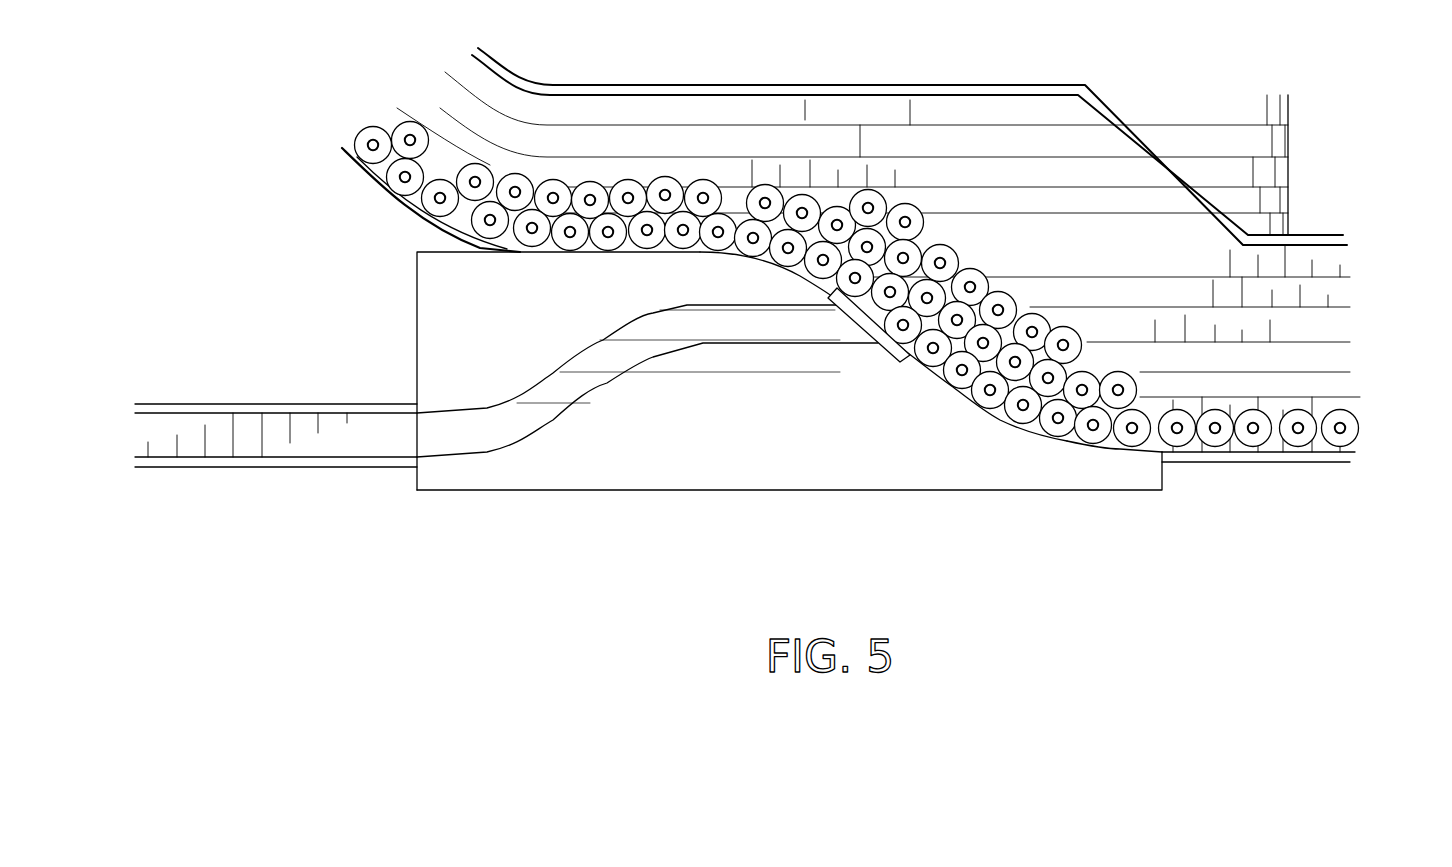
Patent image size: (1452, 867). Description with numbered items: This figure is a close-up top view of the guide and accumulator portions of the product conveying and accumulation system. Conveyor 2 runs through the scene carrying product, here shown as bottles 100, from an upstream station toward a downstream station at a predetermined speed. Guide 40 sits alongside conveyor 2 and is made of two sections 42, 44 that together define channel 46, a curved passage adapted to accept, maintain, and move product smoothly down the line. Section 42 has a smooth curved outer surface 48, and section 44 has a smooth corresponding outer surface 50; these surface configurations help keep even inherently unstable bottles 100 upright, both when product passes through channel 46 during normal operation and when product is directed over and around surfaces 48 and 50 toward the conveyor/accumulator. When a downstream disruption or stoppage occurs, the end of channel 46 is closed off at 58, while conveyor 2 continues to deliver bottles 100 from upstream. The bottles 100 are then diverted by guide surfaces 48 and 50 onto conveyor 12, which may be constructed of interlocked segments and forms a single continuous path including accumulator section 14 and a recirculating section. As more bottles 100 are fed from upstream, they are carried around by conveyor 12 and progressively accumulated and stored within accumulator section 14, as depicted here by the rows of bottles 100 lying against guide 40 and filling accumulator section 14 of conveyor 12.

The conveyor 2 is at (1323, 447).
The conveyor 12 is at (1230, 293).
The accumulator section 14 is at (1013, 140).
The guide 40 is at (1140, 491).
The section 42 is at (760, 433).
The section 44 is at (463, 295).
The channel 46 is at (597, 383).
The smooth curved outer surface 48 is at (1000, 418).
The smooth corresponding outer surface 50 is at (773, 253).
The closed-off end of channel 58 is at (895, 365).
The bottles 100 is at (1092, 437).